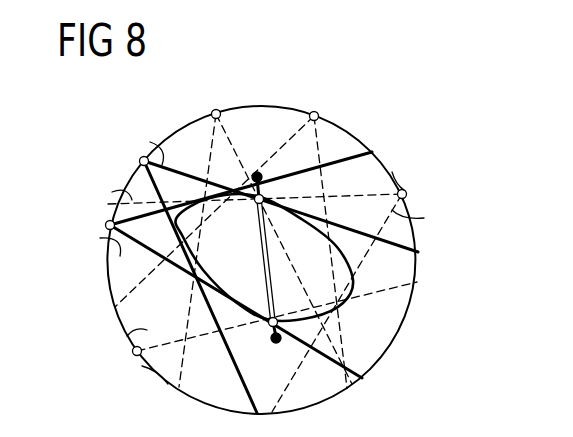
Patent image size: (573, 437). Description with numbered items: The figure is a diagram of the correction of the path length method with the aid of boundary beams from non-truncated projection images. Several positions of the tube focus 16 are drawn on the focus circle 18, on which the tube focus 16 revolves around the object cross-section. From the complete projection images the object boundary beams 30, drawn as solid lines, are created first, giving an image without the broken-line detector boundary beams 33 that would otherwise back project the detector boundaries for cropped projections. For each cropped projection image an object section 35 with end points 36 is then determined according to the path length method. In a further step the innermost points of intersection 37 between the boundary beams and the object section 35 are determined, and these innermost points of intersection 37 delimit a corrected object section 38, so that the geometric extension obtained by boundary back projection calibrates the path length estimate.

The tube focus 16 is at (216, 110).
The focus circle 18 is at (357, 130).
The object boundary beams 30 is at (152, 150).
The detector boundary beams 33 is at (395, 176).
The object section 35 is at (268, 197).
The end points 36 is at (258, 172).
The innermost points of intersection 37 is at (256, 204).
The corrected object section 38 is at (272, 262).